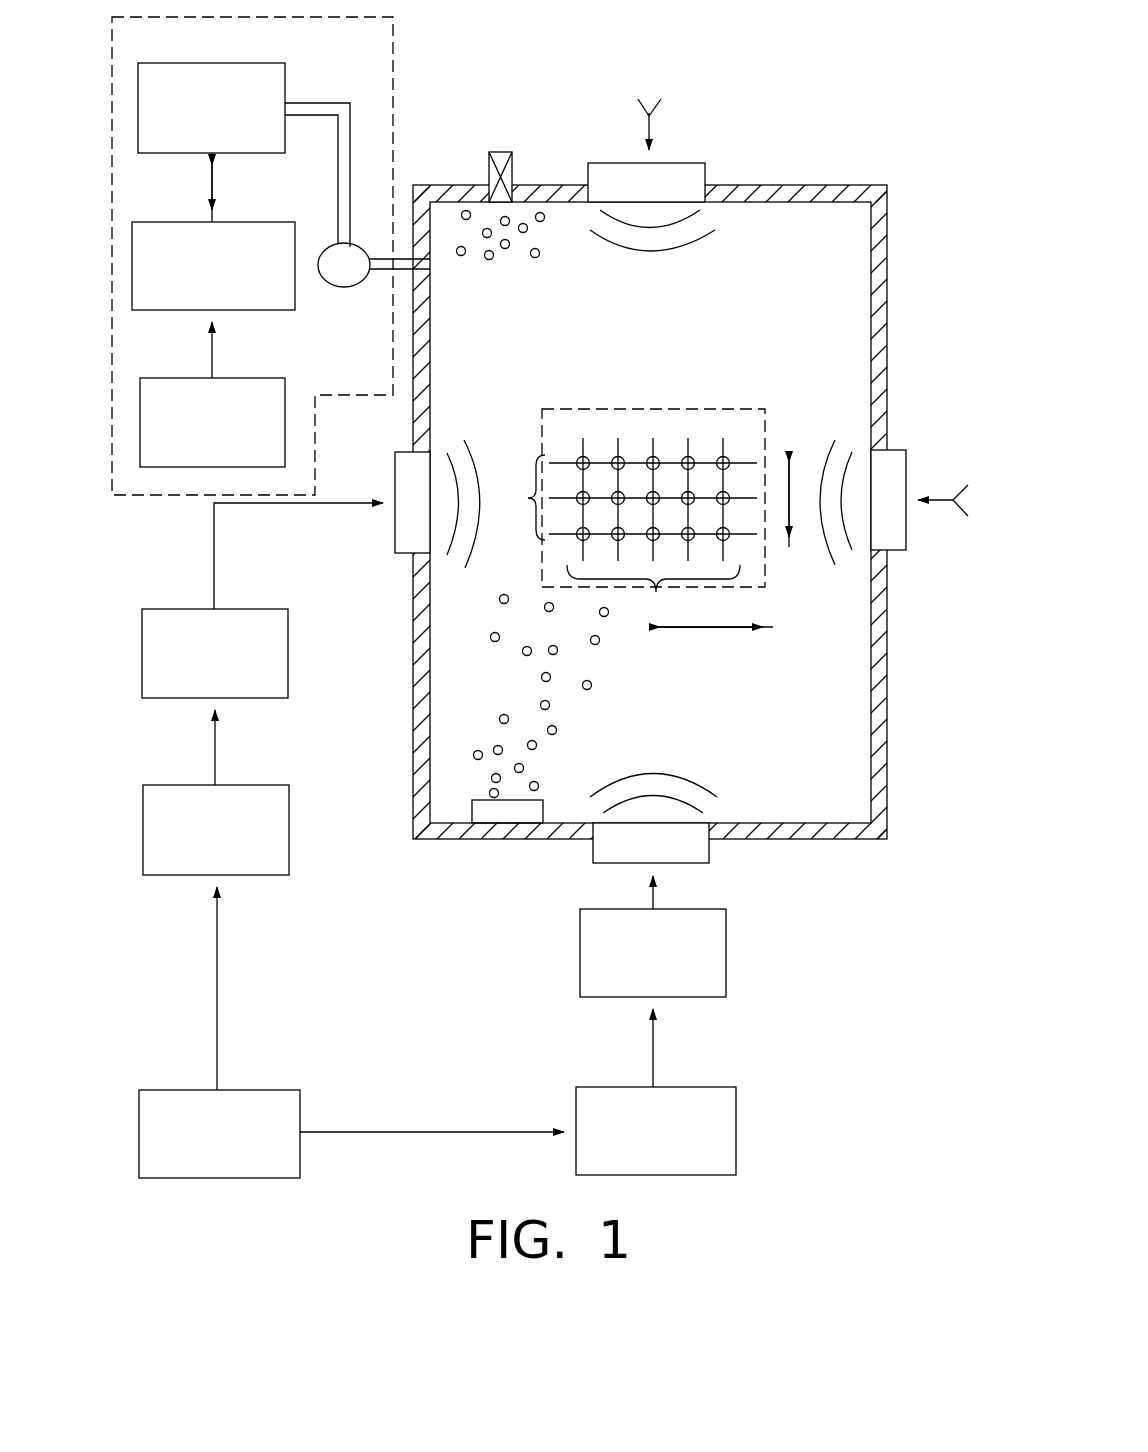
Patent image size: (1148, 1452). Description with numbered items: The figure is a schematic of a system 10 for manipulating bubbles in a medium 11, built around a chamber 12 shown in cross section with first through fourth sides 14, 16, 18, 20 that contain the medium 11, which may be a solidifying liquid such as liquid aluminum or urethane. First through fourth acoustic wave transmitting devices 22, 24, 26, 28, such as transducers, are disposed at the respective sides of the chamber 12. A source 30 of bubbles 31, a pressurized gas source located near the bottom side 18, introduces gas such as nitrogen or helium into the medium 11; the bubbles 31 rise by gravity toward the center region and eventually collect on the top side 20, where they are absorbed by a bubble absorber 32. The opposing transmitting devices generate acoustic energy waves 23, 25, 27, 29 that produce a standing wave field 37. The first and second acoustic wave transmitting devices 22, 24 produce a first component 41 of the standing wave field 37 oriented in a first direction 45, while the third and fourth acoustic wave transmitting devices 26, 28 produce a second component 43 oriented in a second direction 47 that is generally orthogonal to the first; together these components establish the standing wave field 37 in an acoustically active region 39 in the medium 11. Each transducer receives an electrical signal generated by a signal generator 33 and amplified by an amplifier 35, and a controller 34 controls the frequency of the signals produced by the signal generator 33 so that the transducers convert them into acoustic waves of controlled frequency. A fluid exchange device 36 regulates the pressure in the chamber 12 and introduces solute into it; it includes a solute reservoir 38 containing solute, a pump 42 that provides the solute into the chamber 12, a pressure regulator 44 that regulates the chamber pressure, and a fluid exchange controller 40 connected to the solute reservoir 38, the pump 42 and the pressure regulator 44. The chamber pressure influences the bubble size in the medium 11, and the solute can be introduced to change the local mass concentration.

The system 10 is at (541, 48).
The medium 11 is at (795, 318).
The chamber 12 is at (650, 474).
The first side 14 is at (415, 718).
The second side 16 is at (889, 778).
The third side 18 is at (760, 818).
The fourth side 20 is at (818, 203).
The first acoustic wave transmitting device 22 is at (392, 535).
The acoustic energy wave 23 is at (478, 550).
The second acoustic wave transmitting device 24 is at (907, 522).
The acoustic energy wave 25 is at (826, 553).
The third acoustic wave transmitting device 26 is at (600, 865).
The acoustic energy wave 27 is at (655, 775).
The fourth acoustic wave transmitting device 28 is at (688, 163).
The acoustic energy wave 29 is at (655, 252).
The source of bubbles 30 is at (510, 818).
The bubbles 31 is at (600, 644).
The bubble absorber 32 is at (506, 152).
The signal generator 33 is at (236, 785).
The controller 34 is at (245, 1090).
The amplifier 35 is at (233, 609).
The fluid exchange device 36 is at (283, 256).
The standing wave field 37 is at (565, 447).
The solute reservoir 38 is at (238, 63).
The acoustically active region 39 is at (598, 409).
The fluid exchange controller 40 is at (243, 222).
The first component of standing wave field 41 is at (653, 593).
The pump 42 is at (345, 287).
The second component of standing wave field 43 is at (516, 497).
The pressure regulator 44 is at (243, 378).
The first direction 45 is at (790, 494).
The second direction 47 is at (700, 630).